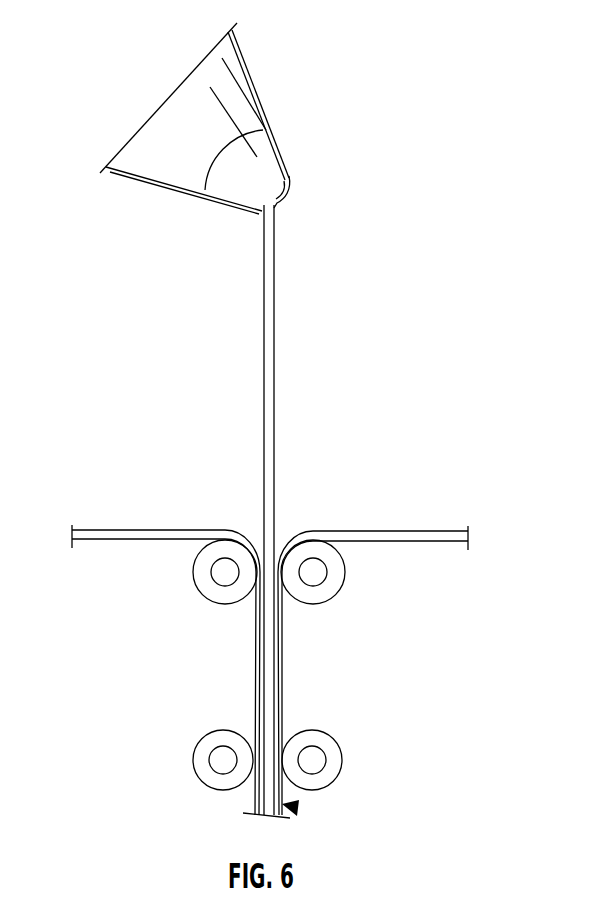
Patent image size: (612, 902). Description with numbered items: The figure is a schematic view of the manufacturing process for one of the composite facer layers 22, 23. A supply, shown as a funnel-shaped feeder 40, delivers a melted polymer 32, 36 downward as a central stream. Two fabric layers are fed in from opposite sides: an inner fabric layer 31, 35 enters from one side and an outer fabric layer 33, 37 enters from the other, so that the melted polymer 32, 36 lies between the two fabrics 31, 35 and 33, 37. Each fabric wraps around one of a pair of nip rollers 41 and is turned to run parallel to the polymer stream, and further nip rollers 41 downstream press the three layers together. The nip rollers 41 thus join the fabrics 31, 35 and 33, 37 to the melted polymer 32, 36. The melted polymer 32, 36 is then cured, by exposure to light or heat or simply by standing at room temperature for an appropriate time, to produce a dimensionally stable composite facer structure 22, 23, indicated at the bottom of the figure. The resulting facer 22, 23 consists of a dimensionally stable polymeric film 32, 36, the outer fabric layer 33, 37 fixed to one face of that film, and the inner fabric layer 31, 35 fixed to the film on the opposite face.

The funnel former 40 is at (190, 159).
The melted polymer 32 is at (323, 510).
The melted polymer 36 is at (276, 393).
The inner fabric layer 31 is at (143, 648).
The inner fabric layer 35 is at (121, 530).
The outer fabric layer 33 is at (402, 650).
The outer fabric layer 37 is at (423, 532).
The nip rollers 41 is at (202, 597).
The composite facer layer 22 is at (340, 827).
The composite facer layer 23 is at (297, 808).